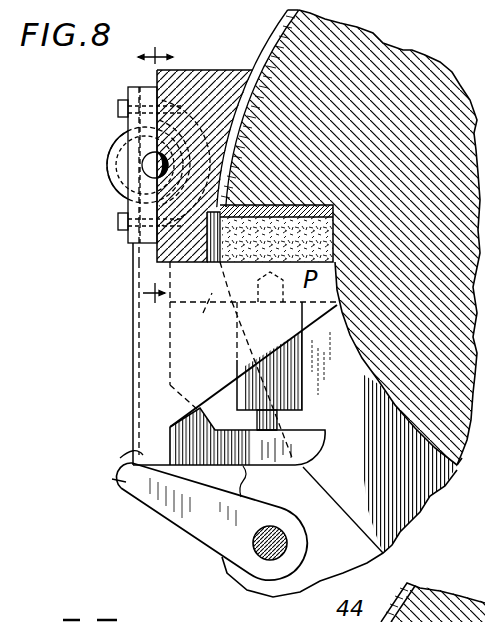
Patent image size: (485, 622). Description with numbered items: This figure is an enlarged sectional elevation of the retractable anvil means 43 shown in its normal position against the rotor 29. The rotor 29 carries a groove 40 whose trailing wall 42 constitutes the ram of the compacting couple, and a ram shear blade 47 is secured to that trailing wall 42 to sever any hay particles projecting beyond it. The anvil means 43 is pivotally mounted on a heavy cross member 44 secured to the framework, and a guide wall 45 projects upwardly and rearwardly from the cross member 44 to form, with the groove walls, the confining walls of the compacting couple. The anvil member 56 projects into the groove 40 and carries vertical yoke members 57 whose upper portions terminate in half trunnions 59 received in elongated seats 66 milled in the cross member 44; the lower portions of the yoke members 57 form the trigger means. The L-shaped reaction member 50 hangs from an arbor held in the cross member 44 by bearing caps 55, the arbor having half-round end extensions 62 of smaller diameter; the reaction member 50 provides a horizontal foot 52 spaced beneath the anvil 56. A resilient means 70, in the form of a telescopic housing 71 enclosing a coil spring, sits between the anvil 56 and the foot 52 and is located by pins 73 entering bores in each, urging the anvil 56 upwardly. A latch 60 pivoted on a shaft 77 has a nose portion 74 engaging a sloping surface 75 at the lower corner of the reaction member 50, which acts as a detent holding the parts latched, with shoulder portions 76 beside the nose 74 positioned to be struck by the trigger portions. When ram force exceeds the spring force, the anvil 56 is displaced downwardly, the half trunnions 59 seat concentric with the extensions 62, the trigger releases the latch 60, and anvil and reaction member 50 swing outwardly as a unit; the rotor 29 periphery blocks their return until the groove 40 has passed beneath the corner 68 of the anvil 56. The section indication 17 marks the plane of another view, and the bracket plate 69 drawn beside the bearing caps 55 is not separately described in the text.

The section line 17 is at (159, 180).
The rotor 29 is at (430, 42).
The groove 40 is at (405, 520).
The trailing wall 42 is at (233, 262).
The retractable anvil means 43 is at (122, 380).
The cross member 44 is at (252, 70).
The guide wall 45 is at (284, 27).
The ram shear blade 47 is at (209, 262).
The reaction member 50 is at (140, 393).
The horizontal foot 52 is at (311, 455).
The bearing caps 55 is at (148, 169).
The anvil member 56 is at (253, 361).
The yoke members 57 is at (133, 343).
The half trunnions 59 is at (163, 143).
The latch 60 is at (172, 514).
The end extensions 62 is at (155, 158).
The seat 66 is at (153, 180).
The corner 68 is at (322, 322).
The anchor bracket 69 is at (128, 90).
The resilient means 70 is at (272, 371).
The telescopic housing 71 is at (302, 403).
The pins 73 is at (278, 424).
The nose portion 74 is at (112, 465).
The sloping surface 75 is at (137, 450).
The shoulder portions 76 is at (123, 485).
The shaft 77 is at (288, 545).